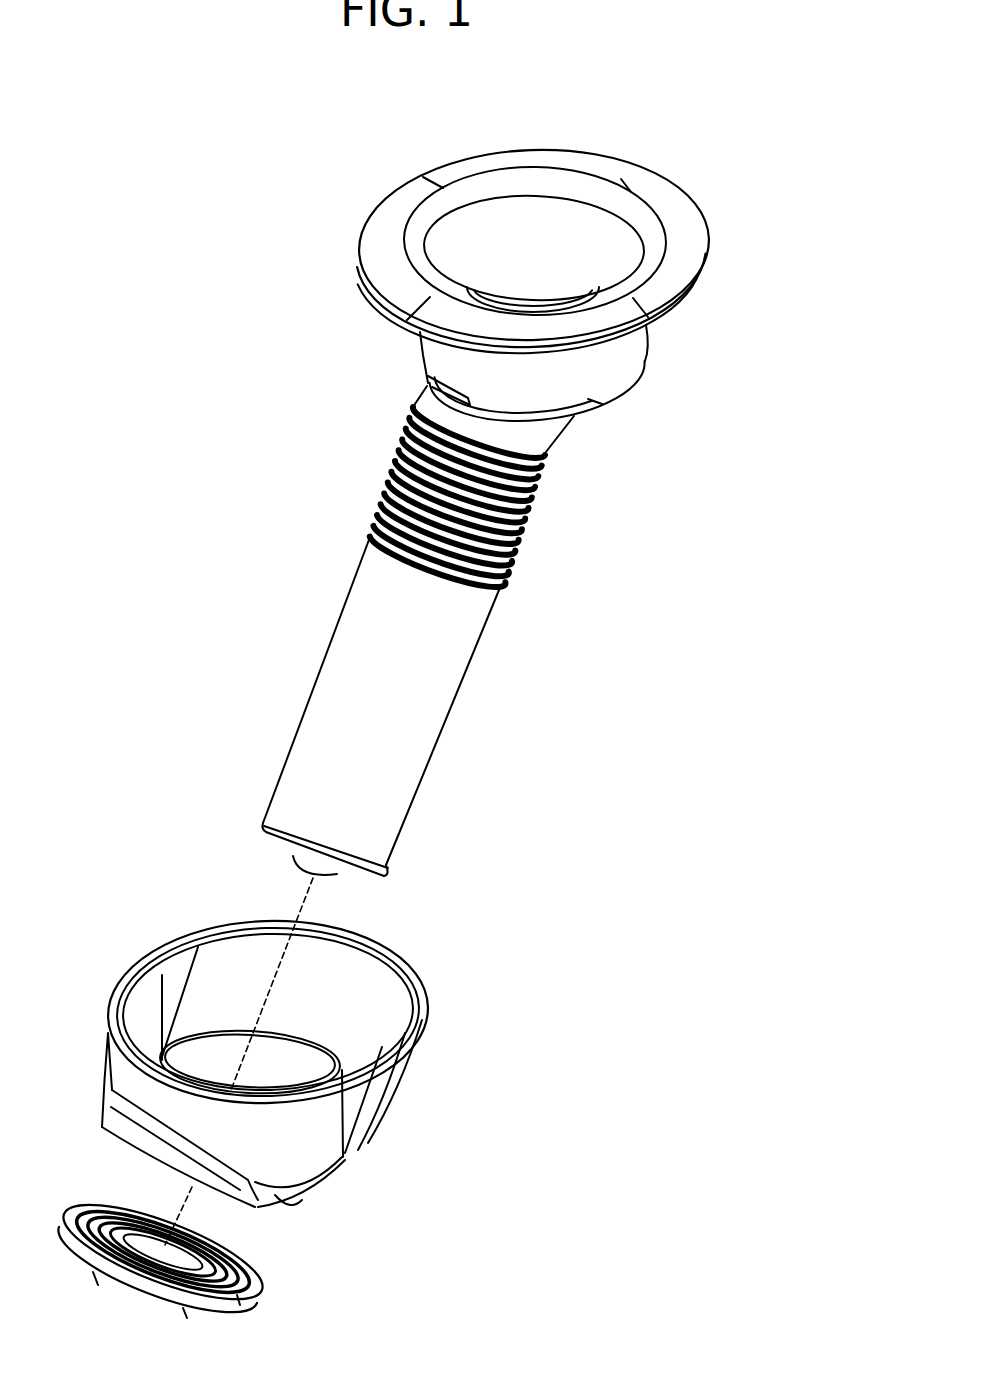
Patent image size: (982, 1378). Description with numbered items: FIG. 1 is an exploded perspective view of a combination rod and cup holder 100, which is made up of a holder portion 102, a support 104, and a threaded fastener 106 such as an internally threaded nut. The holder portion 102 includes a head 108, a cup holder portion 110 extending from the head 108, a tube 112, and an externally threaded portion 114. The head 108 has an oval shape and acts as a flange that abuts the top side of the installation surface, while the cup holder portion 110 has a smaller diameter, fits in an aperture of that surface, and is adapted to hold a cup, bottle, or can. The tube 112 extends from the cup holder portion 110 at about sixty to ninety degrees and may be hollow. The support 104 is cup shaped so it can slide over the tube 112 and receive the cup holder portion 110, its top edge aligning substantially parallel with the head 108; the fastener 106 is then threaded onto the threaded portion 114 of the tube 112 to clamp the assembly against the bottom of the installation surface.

The combination rod and cup holder 100 is at (214, 234).
The holder portion 102 is at (674, 558).
The support 104 is at (398, 1080).
The threaded fastener 106 is at (262, 1305).
The head 108 is at (697, 233).
The cup holder portion 110 is at (623, 380).
The tube 112 is at (460, 665).
The externally threaded portion 114 is at (537, 500).